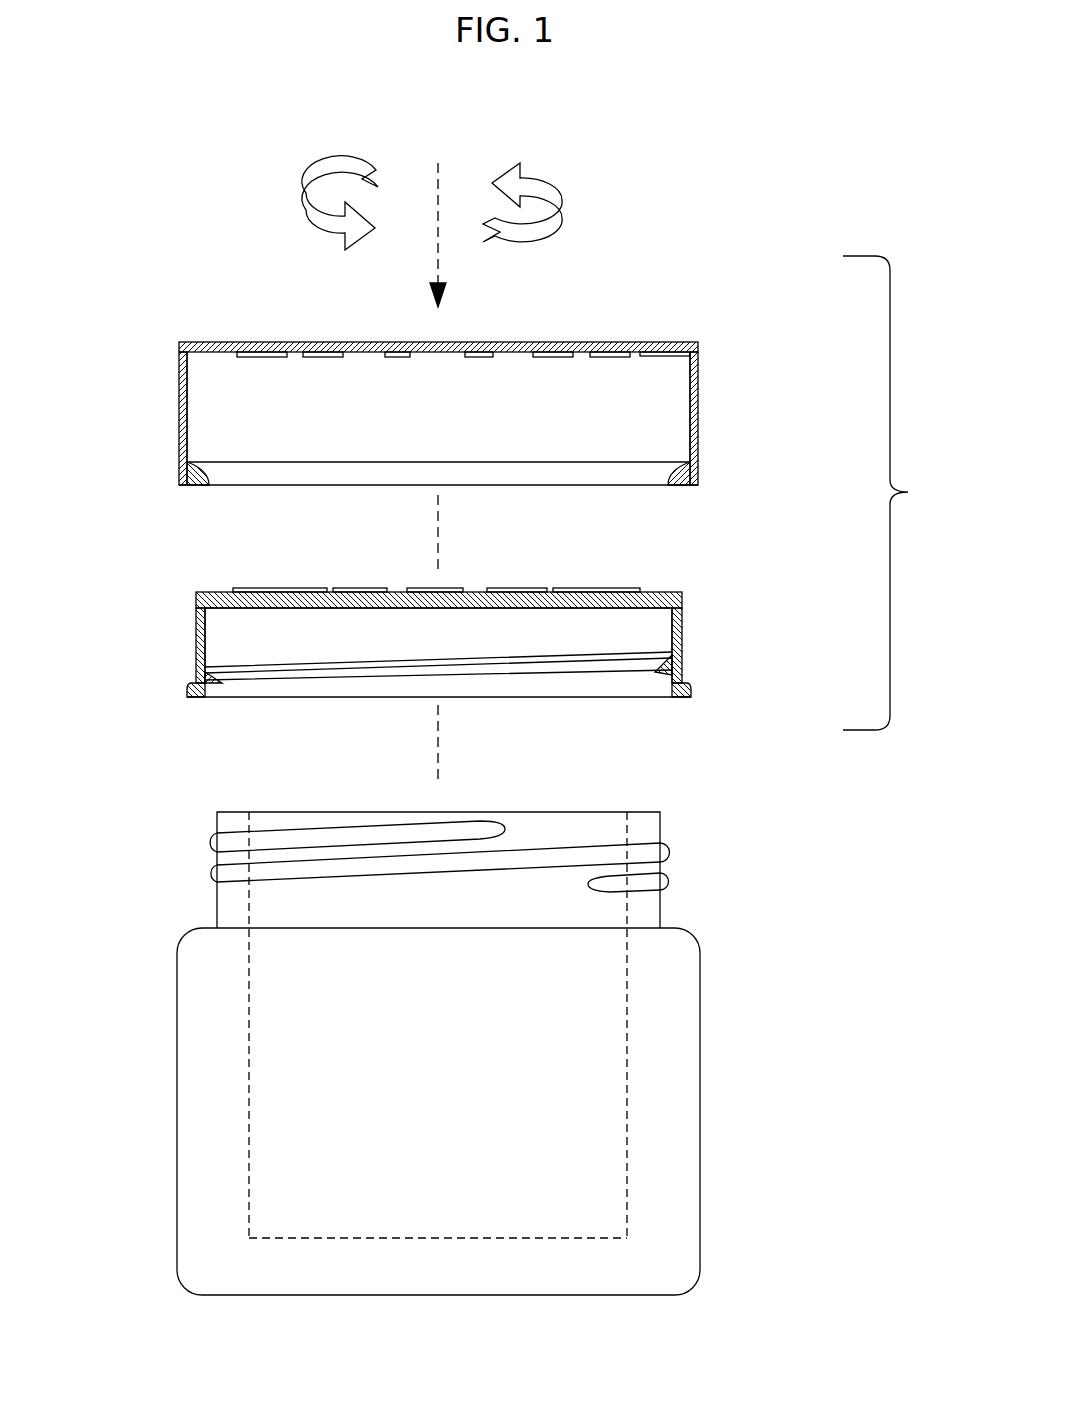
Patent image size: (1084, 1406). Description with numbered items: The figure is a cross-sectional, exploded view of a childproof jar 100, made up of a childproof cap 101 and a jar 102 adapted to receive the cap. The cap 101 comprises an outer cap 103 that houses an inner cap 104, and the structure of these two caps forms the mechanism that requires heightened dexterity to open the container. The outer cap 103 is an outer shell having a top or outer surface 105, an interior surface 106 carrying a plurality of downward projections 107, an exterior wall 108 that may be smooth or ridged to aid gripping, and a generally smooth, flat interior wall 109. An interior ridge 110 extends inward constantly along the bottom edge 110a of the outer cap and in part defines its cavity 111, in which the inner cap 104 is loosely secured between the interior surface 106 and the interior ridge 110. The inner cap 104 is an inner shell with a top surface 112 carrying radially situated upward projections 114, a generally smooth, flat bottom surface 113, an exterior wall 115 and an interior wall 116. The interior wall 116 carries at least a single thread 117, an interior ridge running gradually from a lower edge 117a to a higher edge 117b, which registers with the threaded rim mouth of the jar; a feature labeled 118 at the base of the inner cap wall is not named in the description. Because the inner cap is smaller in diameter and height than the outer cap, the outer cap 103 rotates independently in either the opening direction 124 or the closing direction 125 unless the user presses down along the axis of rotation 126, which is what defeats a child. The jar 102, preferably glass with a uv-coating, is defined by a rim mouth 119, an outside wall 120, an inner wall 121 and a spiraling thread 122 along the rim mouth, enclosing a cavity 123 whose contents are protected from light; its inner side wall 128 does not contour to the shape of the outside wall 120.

The childproof jar 100 is at (110, 262).
The childproof cap 101 is at (526, 504).
The jar 102 is at (177, 823).
The outer cap 103 is at (698, 334).
The inner cap 104 is at (684, 591).
The top or outer surface 105 is at (297, 342).
The interior surface 106 is at (510, 357).
The downward projections 107 is at (318, 357).
The exterior wall 108 is at (180, 400).
The interior wall 109 is at (188, 452).
The interior ridge 110 is at (198, 473).
The bottom edge 110a is at (183, 487).
The cavity 111 is at (666, 433).
The top surface 112 is at (400, 590).
The bottom surface 113 is at (612, 608).
The upward projections 114 is at (505, 590).
The exterior wall 115 is at (196, 612).
The interior wall 116 is at (242, 650).
The thread 117 is at (440, 656).
The lower edge 117a is at (212, 684).
The higher edge 117b is at (668, 662).
The flange 118 is at (190, 686).
The rim mouth 119 is at (217, 905).
The outside wall 120 is at (700, 1065).
The inner wall 121 is at (473, 1237).
The thread 122 is at (470, 878).
The cavity 123 is at (462, 1074).
The opening direction 124 is at (563, 200).
The closing direction 125 is at (308, 192).
The axis of rotation 126 is at (436, 278).
The inner side wall 128 is at (250, 1000).